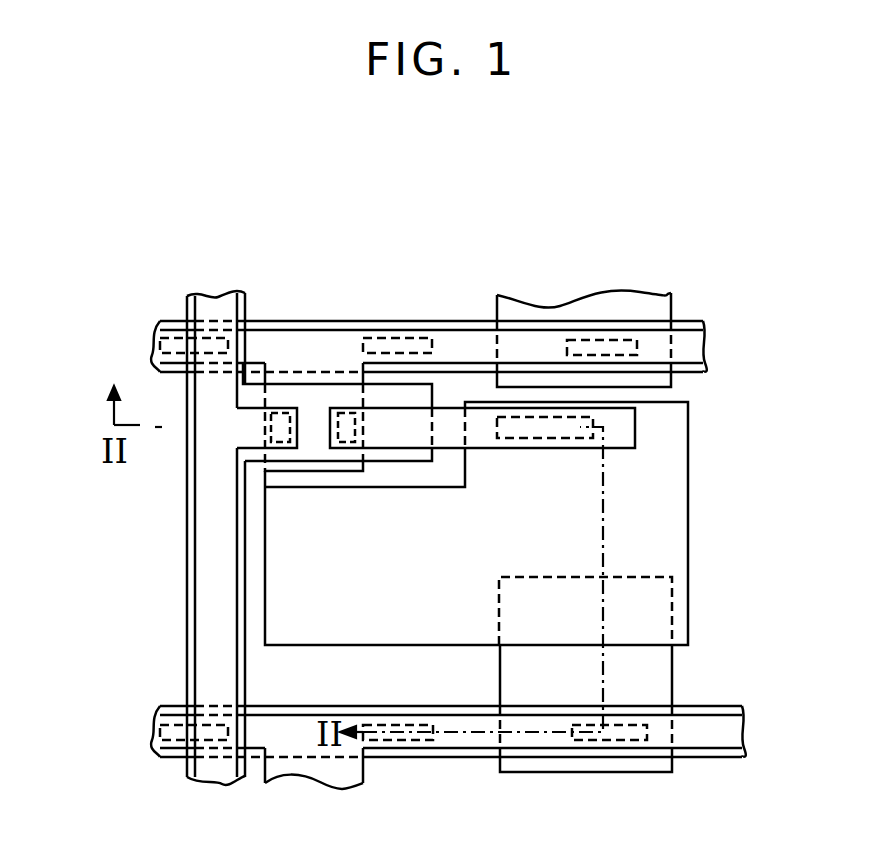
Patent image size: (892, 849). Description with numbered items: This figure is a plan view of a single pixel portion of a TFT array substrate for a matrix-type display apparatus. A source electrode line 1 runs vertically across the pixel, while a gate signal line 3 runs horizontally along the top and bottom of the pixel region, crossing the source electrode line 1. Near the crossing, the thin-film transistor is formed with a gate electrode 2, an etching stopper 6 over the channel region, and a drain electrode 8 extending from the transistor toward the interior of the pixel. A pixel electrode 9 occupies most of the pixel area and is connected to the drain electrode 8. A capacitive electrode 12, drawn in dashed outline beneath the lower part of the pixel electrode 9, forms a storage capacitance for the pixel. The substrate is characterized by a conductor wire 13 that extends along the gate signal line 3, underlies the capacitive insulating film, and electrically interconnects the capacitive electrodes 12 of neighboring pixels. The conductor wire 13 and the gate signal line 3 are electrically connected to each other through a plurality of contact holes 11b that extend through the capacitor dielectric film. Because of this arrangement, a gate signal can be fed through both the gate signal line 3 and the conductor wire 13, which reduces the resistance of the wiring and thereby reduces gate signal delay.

The source electrode line 1 is at (218, 306).
The gate electrode 2 is at (297, 468).
The gate signal line 3 is at (692, 345).
The etching stopper 6 is at (313, 400).
The drain electrode 8 is at (627, 432).
The pixel electrode 9 is at (695, 538).
The contact hole 11b is at (578, 338).
The capacitive electrode 12 is at (658, 618).
The conductor wire 13 is at (702, 321).